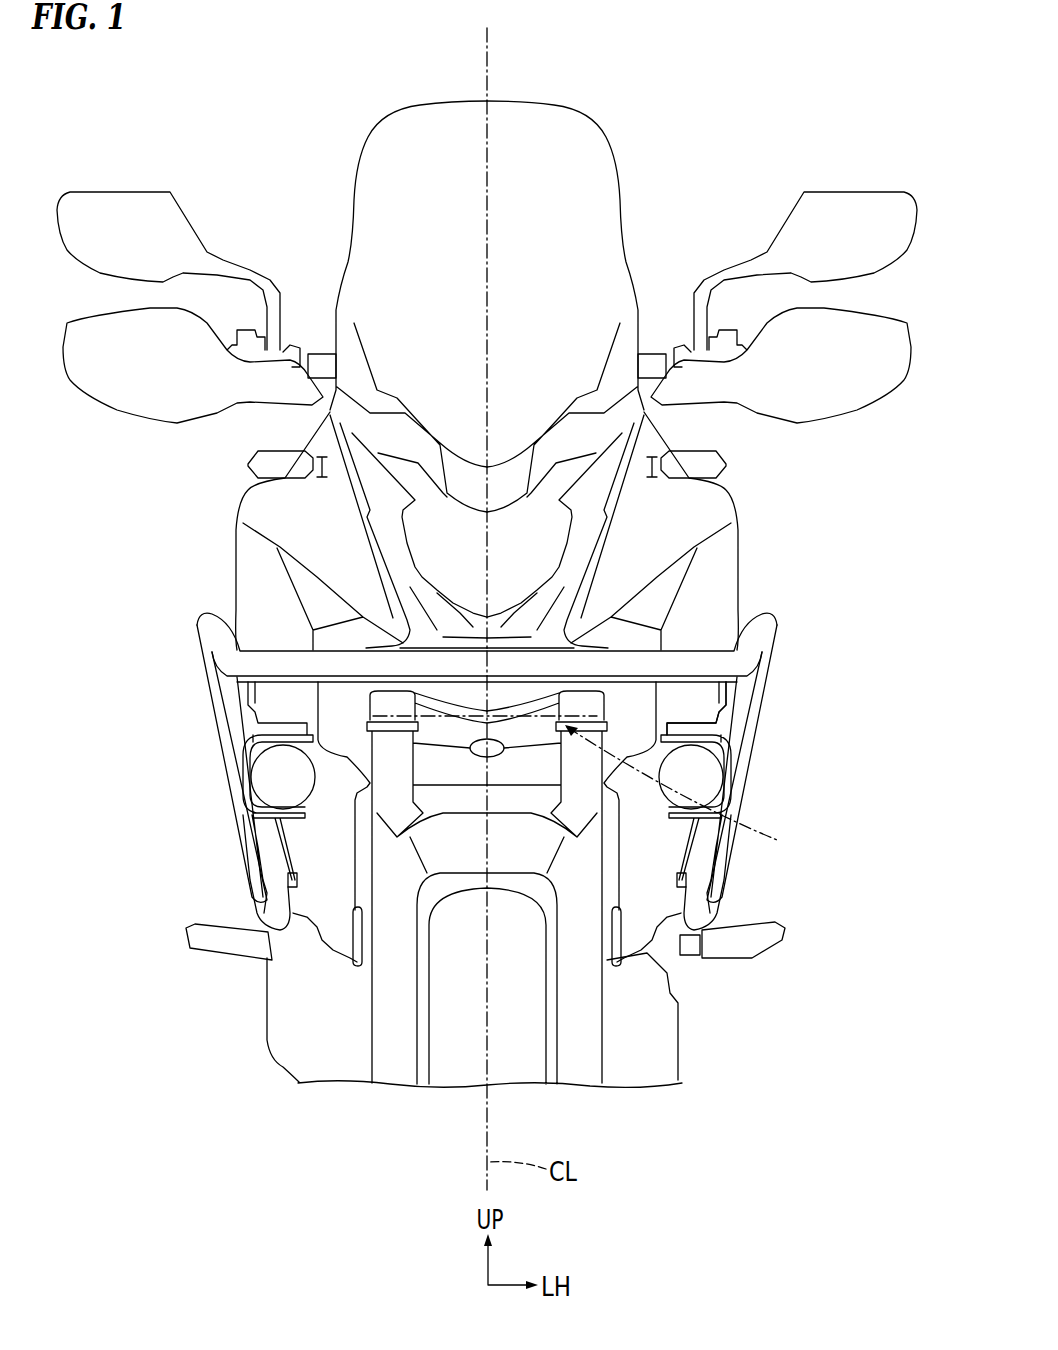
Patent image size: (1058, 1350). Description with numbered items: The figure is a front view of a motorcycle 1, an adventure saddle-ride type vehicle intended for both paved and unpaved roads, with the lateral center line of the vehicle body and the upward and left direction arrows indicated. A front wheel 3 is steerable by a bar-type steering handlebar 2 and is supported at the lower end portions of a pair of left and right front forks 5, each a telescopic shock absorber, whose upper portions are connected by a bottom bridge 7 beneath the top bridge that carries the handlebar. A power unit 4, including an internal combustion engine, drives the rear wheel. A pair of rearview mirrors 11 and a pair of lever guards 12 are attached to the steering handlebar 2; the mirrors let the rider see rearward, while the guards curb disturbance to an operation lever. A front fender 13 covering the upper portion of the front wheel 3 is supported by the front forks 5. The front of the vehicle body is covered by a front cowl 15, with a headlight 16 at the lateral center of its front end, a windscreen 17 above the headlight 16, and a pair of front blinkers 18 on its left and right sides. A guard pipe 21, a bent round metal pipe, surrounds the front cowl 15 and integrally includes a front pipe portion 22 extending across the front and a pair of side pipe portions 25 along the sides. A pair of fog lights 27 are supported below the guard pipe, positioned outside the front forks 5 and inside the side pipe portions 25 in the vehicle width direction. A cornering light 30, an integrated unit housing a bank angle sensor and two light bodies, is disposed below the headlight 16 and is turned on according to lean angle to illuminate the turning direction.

The motorcycle 1 is at (726, 129).
The steering handlebar 2 is at (487, 327).
The front wheel 3 is at (495, 1121).
The power unit 4 is at (515, 980).
The front forks 5 is at (485, 887).
The bottom bridge 7 is at (445, 702).
The rearview mirrors 11 is at (487, 236).
The lever guards 12 is at (487, 393).
The front fender 13 is at (467, 832).
The front cowl 15 is at (533, 531).
The headlight 16 is at (563, 531).
The windscreen 17 is at (466, 306).
The front blinkers 18 is at (489, 458).
The guard pipe 21 is at (538, 644).
The front pipe portion 22 is at (750, 708).
The side pipe portions 25 is at (485, 763).
The fog lights 27 is at (488, 784).
The cornering light 30 is at (697, 793).